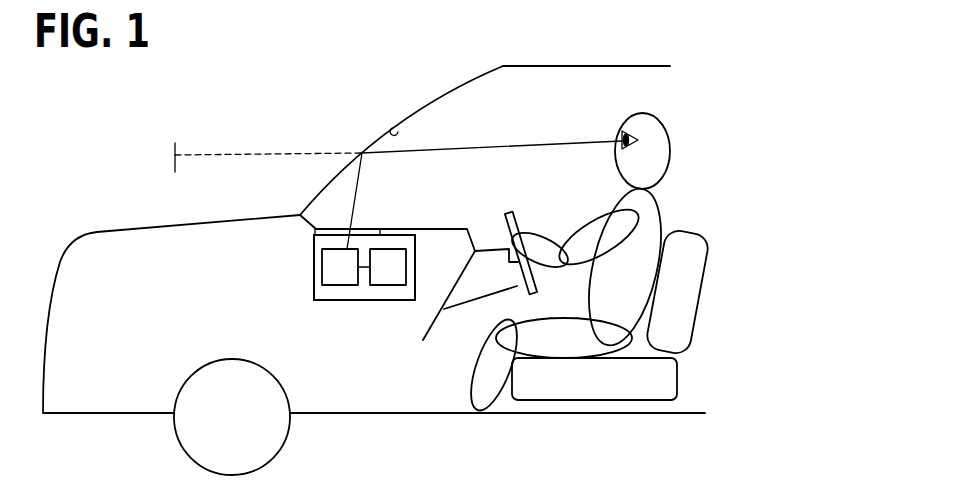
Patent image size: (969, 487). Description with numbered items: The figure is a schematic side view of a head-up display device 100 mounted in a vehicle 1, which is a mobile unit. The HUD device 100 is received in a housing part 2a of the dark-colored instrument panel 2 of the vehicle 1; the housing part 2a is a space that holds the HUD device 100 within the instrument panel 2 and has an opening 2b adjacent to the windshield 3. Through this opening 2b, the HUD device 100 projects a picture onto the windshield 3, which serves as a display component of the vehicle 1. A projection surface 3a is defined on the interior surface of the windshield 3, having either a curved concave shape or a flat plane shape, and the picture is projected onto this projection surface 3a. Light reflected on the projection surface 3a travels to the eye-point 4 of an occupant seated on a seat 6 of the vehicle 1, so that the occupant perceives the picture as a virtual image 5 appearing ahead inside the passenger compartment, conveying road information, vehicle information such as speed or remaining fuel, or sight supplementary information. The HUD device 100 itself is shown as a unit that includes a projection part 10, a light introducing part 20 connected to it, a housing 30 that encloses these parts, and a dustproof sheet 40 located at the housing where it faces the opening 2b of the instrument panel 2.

The vehicle 1 is at (622, 66).
The instrument panel 2 is at (438, 229).
The housing part 2a is at (364, 267).
The opening 2b is at (371, 229).
The windshield 3 is at (435, 103).
The projection surface 3a is at (392, 128).
The eye-point 4 is at (623, 140).
The virtual image 5 is at (177, 148).
The seat 6 is at (588, 401).
The projection part 10 is at (388, 285).
The light introducing part 20 is at (322, 265).
The housing 30 is at (314, 290).
The dustproof sheet 40 is at (314, 236).
The head-up display device 100 is at (234, 268).